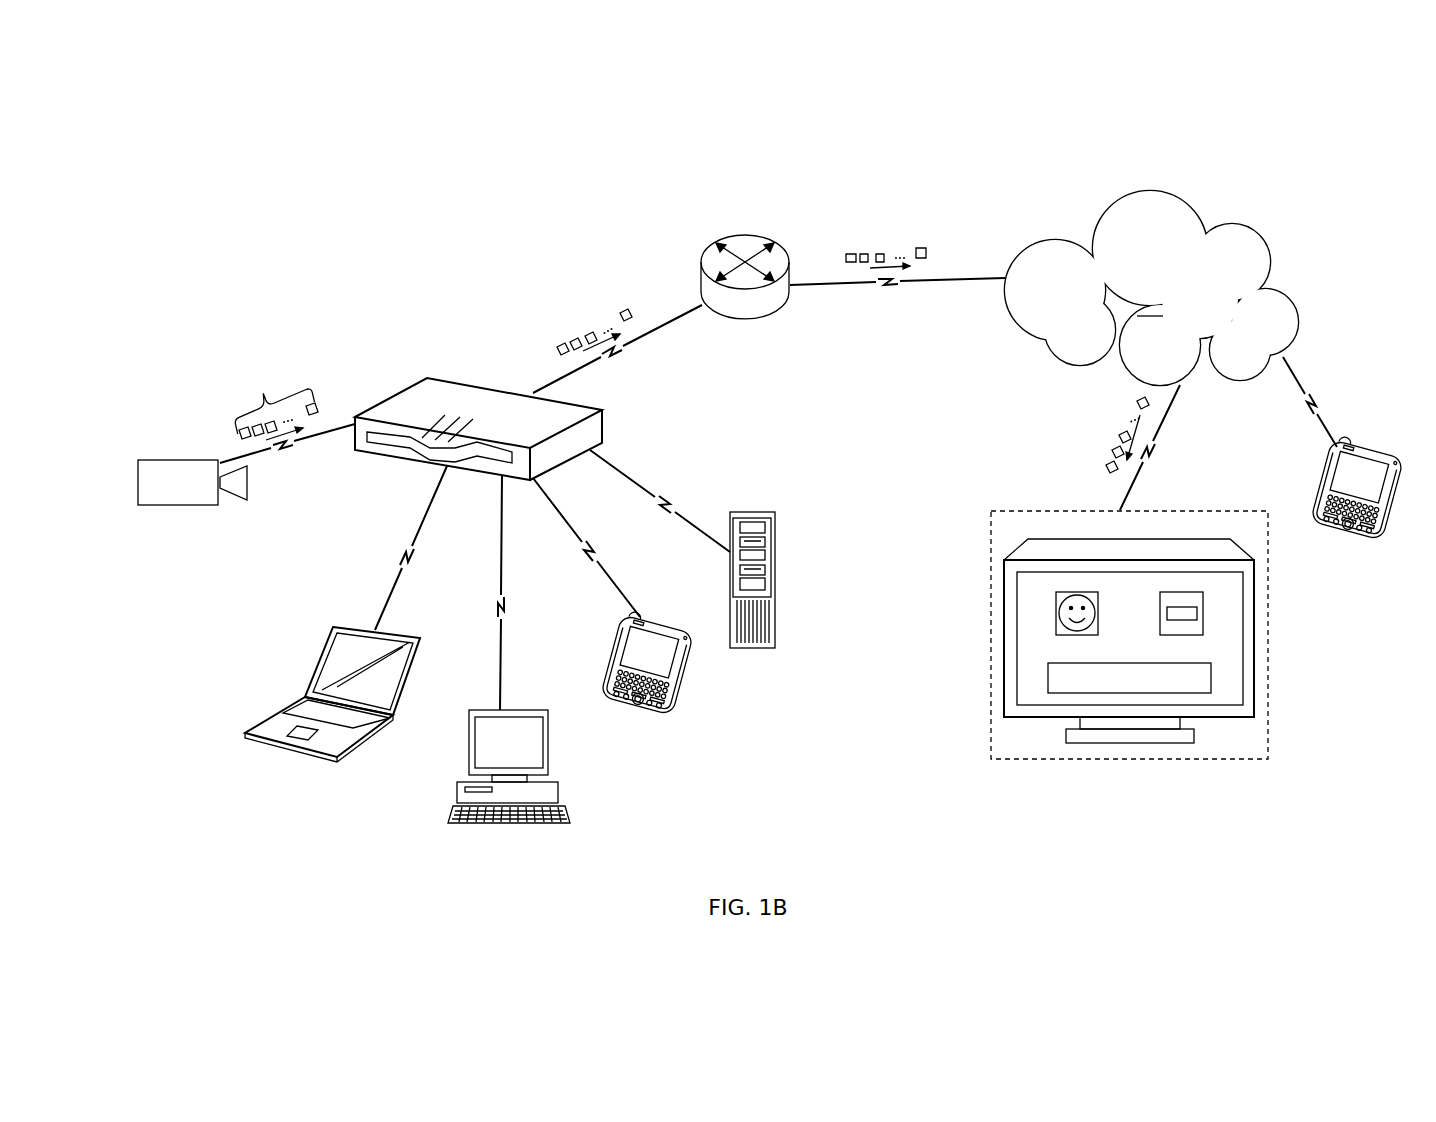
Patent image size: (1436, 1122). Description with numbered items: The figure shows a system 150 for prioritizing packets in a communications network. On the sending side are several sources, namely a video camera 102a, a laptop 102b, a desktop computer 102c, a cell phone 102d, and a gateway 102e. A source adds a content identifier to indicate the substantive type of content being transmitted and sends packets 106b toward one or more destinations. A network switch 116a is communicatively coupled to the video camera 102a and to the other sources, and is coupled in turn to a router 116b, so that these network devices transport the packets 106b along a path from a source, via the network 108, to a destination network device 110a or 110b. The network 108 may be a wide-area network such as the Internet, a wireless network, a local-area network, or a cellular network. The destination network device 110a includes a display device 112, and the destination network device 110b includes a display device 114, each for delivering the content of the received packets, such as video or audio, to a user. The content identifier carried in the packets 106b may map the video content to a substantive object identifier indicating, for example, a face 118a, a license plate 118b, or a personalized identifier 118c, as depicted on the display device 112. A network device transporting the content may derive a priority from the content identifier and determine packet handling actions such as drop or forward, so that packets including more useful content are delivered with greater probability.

The video camera 102a is at (210, 460).
The laptop 102b is at (272, 742).
The desktop computer 102c is at (457, 790).
The cell phone 102d is at (660, 710).
The gateway 102e is at (753, 648).
The packets 106b is at (260, 363).
The network 108 is at (1151, 288).
The destination network device 110a is at (1097, 615).
The destination network device 110b is at (1373, 501).
The display device 112 is at (1090, 631).
The display device 114 is at (1375, 457).
The network switch 116a is at (427, 378).
The router 116b is at (735, 236).
The face 118a is at (1080, 592).
The license plate 118b is at (1196, 592).
The personalized identifier 118c is at (1148, 663).
The system 150 is at (1137, 143).